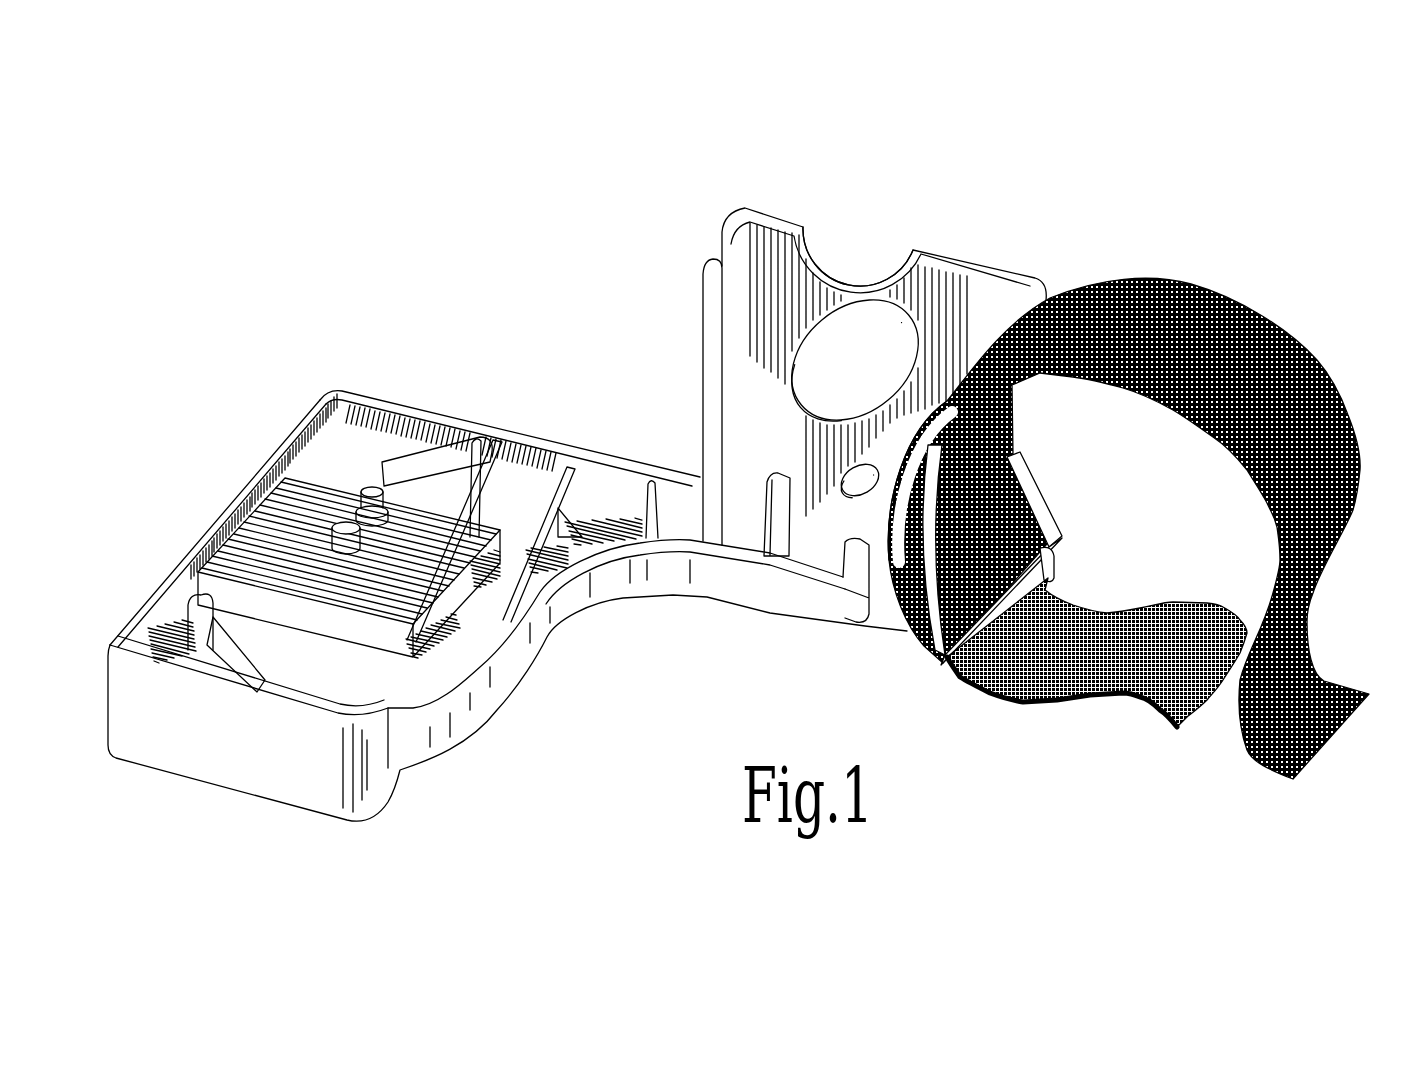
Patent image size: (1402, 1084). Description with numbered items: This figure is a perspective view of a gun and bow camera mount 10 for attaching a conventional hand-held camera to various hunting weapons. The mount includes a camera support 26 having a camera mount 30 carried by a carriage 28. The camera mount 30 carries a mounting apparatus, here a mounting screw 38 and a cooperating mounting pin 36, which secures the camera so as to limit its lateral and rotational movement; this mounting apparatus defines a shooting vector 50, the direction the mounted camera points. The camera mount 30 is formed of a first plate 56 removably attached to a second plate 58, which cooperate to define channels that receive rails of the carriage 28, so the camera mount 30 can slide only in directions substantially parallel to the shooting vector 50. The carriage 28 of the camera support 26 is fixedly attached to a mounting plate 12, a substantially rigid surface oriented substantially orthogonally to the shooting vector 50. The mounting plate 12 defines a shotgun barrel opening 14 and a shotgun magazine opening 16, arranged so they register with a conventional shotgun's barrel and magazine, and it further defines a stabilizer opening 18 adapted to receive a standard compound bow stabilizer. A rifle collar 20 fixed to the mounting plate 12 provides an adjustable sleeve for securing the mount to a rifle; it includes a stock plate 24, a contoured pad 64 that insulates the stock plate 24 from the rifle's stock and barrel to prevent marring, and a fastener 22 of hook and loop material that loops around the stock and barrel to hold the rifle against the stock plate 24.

The gun and bow camera mount 10 is at (328, 275).
The mounting plate 12 is at (718, 230).
The shotgun barrel opening 14 is at (855, 278).
The shotgun magazine opening 16 is at (874, 305).
The stabilizer opening 18 is at (850, 497).
The rifle collar 20 is at (1024, 740).
The fastener 22 is at (1283, 322).
The stock plate 24 is at (933, 667).
The camera support 26 is at (248, 418).
The carriage 28 is at (168, 580).
The camera mount 30 is at (334, 522).
The mounting pin 36 is at (363, 489).
The mounting screw 38 is at (262, 518).
The shooting vector 50 is at (462, 393).
The first plate 56 is at (410, 620).
The second plate 58 is at (280, 690).
The contoured pad 64 is at (921, 638).